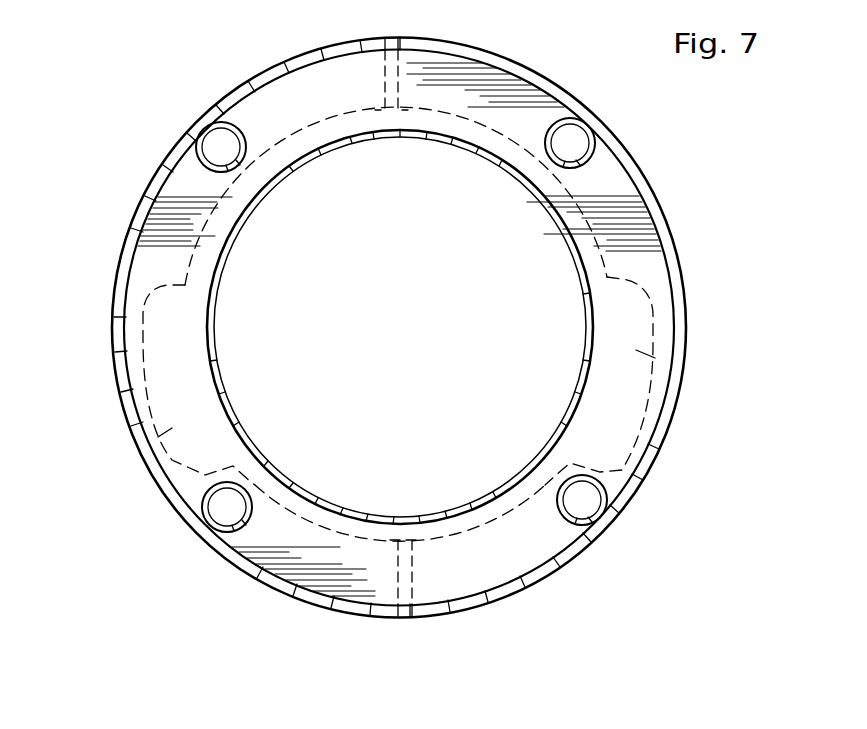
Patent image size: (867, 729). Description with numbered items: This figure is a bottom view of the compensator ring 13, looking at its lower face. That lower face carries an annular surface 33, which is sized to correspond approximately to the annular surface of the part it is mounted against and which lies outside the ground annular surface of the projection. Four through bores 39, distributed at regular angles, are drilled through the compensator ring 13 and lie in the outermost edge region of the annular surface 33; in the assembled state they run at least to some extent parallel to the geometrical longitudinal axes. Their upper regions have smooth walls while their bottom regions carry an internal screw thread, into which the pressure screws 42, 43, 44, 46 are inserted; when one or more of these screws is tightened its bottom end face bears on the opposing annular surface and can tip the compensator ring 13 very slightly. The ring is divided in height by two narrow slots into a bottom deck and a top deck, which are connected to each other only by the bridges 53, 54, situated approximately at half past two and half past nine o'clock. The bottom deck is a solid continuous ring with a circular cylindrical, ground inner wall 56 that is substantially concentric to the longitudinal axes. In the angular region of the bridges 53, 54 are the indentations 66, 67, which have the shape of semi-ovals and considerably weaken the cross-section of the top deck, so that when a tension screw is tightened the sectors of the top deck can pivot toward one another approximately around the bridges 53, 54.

The compensator ring 13 is at (155, 138).
The annular surface 33 is at (138, 268).
The through bores 39 is at (238, 130).
The pressure screw 42 is at (232, 505).
The pressure screw 43 is at (232, 150).
The pressure screw 44 is at (567, 145).
The pressure screw 46 is at (578, 503).
The bridge 53 is at (655, 405).
The bridge 54 is at (135, 400).
The inner wall 56 is at (217, 355).
The indentation 66 is at (640, 356).
The indentation 67 is at (160, 432).